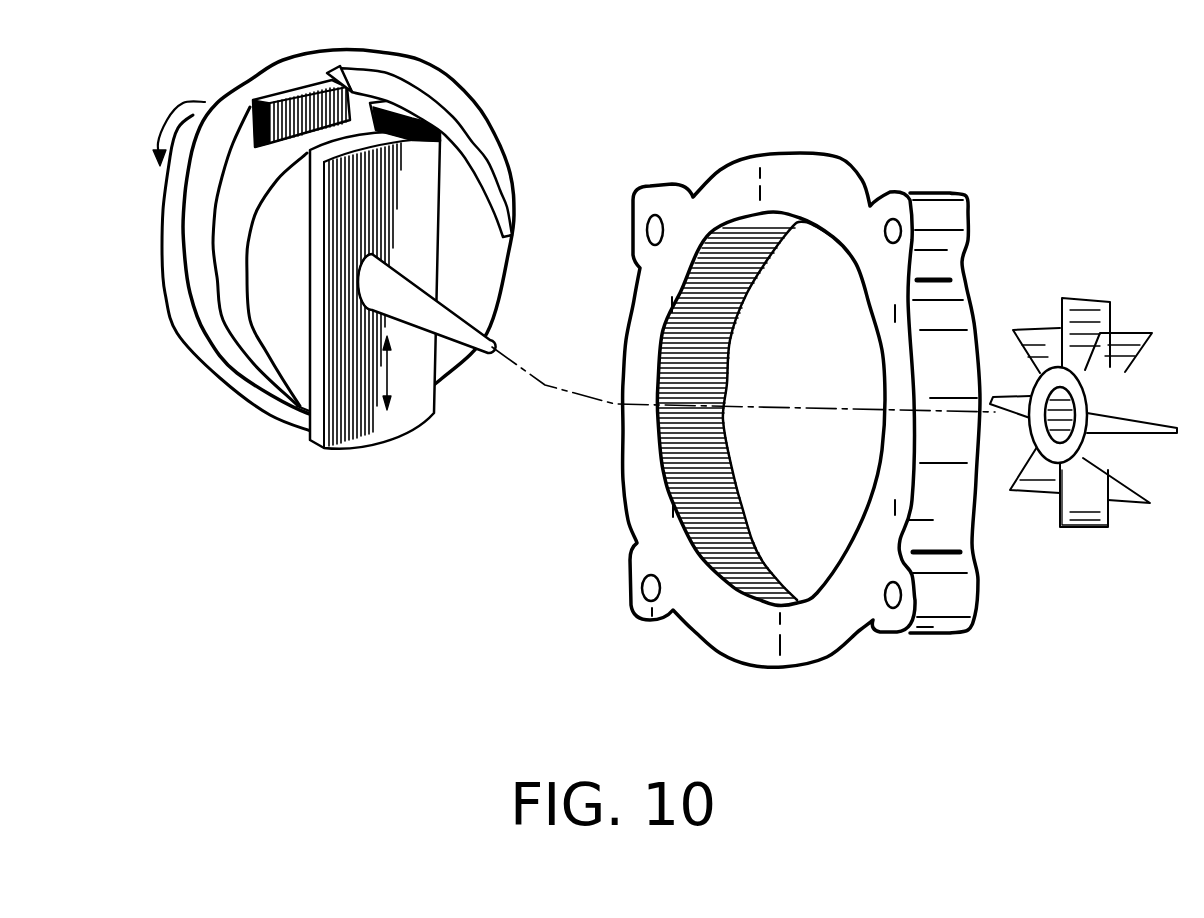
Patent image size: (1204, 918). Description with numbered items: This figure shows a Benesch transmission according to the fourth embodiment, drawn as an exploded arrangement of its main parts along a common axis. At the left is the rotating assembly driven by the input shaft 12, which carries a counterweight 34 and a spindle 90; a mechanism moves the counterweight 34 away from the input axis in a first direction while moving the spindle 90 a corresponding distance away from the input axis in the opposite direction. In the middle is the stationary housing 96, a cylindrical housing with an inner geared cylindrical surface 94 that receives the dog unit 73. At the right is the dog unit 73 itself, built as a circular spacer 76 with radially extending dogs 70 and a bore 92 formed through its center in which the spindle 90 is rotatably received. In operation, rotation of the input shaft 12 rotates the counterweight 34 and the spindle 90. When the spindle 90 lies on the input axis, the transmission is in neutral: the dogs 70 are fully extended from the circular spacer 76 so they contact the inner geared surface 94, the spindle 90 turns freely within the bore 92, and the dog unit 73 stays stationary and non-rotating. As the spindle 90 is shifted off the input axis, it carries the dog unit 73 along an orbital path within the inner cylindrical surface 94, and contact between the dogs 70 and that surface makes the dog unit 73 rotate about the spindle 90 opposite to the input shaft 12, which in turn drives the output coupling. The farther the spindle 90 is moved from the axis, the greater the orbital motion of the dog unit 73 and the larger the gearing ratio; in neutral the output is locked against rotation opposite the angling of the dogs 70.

The input shaft 12 is at (189, 87).
The counterweight 34 is at (417, 79).
The spindle 90 is at (485, 362).
The inner geared cylindrical surface 94 is at (727, 537).
The stationary housing 96 is at (737, 633).
The dogs 70 is at (1092, 305).
The dog unit 73 is at (1082, 483).
The circular spacer 76 is at (1115, 408).
The bore 92 is at (1060, 427).